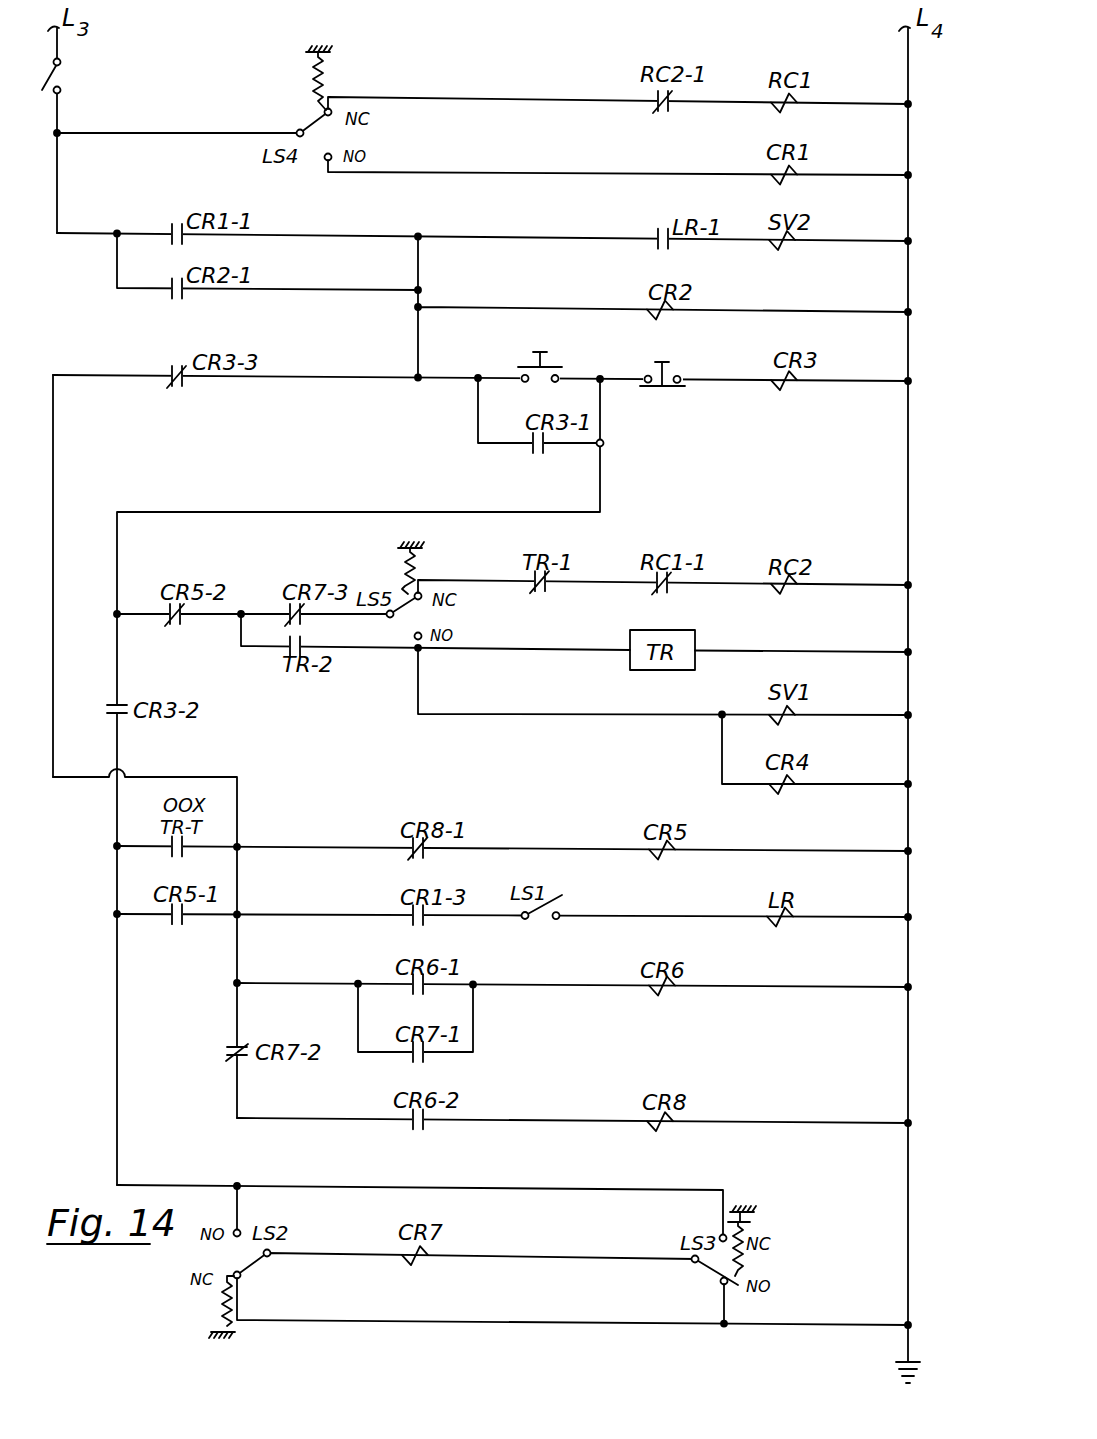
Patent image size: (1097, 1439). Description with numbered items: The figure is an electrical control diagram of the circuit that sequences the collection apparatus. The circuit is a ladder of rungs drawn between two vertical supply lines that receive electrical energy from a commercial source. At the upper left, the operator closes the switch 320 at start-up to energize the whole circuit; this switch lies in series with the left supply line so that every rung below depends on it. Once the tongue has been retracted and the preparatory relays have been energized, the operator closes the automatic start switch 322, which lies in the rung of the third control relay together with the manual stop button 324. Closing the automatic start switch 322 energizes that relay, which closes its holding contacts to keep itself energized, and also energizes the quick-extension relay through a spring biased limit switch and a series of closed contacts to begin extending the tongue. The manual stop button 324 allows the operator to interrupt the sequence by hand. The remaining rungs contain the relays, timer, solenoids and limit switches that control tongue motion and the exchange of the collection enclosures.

The switch 320 is at (62, 75).
The automatic start switch 322 is at (556, 366).
The manual stop button 324 is at (681, 368).